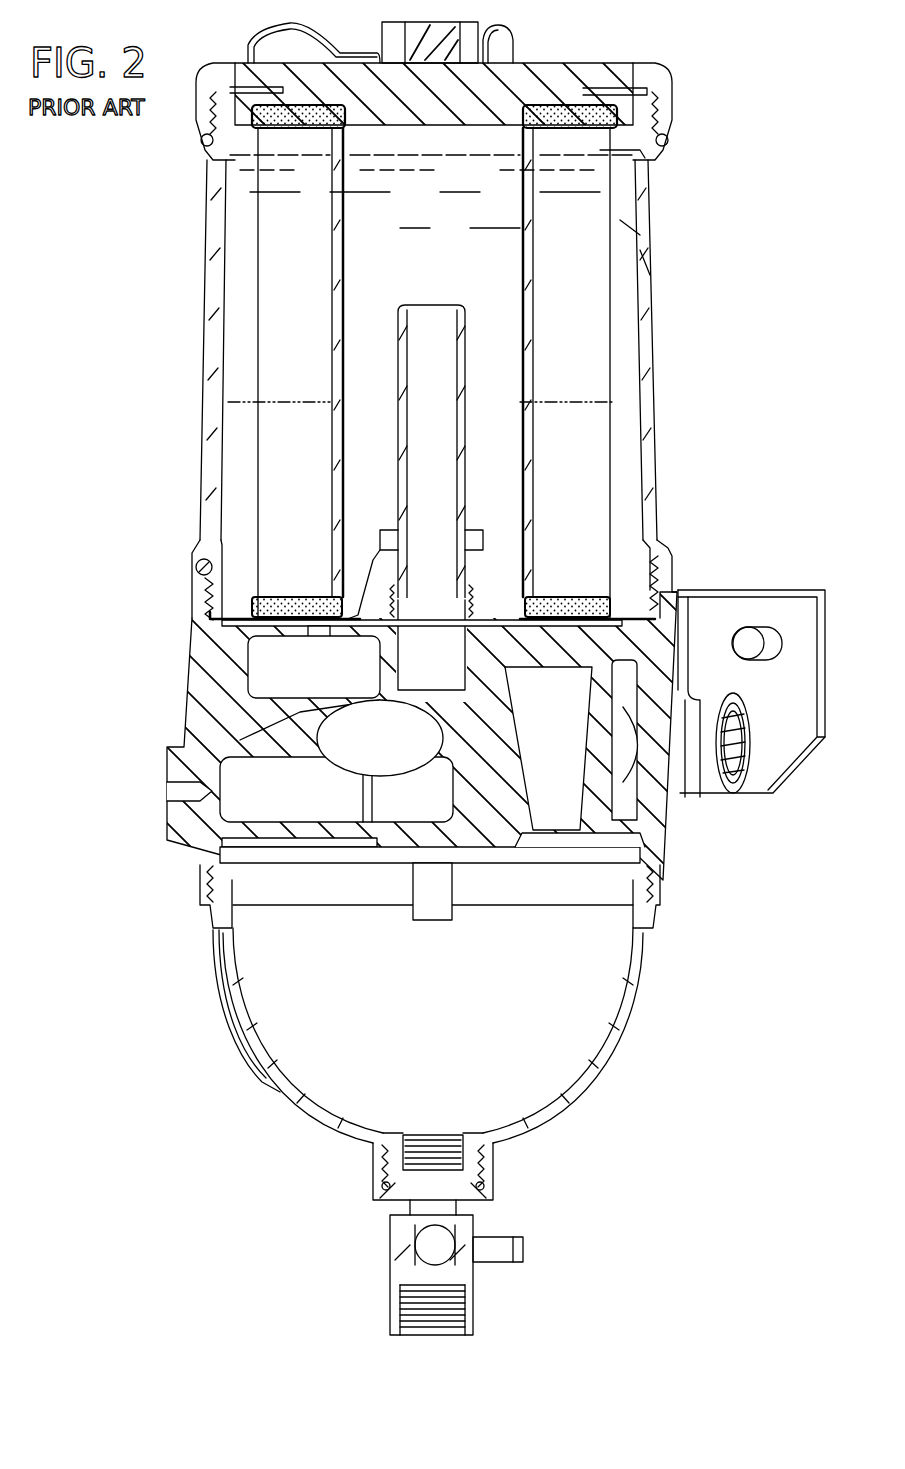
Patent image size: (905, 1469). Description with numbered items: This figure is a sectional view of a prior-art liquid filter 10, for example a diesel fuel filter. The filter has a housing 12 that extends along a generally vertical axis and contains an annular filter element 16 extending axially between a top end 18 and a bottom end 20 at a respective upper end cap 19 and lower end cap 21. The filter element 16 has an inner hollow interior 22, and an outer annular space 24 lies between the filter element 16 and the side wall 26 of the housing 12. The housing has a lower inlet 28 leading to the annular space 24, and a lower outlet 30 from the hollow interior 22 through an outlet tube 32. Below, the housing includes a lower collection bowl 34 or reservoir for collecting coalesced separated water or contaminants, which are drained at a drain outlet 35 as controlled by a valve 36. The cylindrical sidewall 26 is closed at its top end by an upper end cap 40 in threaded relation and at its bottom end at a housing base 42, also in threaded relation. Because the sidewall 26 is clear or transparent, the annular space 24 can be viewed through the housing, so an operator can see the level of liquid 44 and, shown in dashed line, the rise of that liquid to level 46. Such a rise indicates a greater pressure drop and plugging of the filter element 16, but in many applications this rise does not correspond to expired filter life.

The liquid filter 10 is at (100, 234).
The housing 12 is at (203, 313).
The annular filter element 16 is at (597, 318).
The top end 18 is at (600, 110).
The upper end cap 19 is at (615, 118).
The bottom end 20 is at (573, 598).
The lower end cap 21 is at (615, 605).
The inner hollow interior 22 is at (446, 267).
The outer annular space 24 is at (625, 228).
The side wall 26 is at (646, 262).
The lower inlet 28 is at (740, 755).
The lower outlet 30 is at (350, 735).
The outlet tube 32 is at (400, 405).
The lower collection bowl 34 is at (520, 1100).
The drain outlet 35 is at (470, 1325).
The valve 36 is at (493, 1245).
The upper end cap 40 is at (583, 72).
The housing base 42 is at (200, 672).
The liquid level 44 is at (625, 400).
The liquid level 46 is at (600, 150).